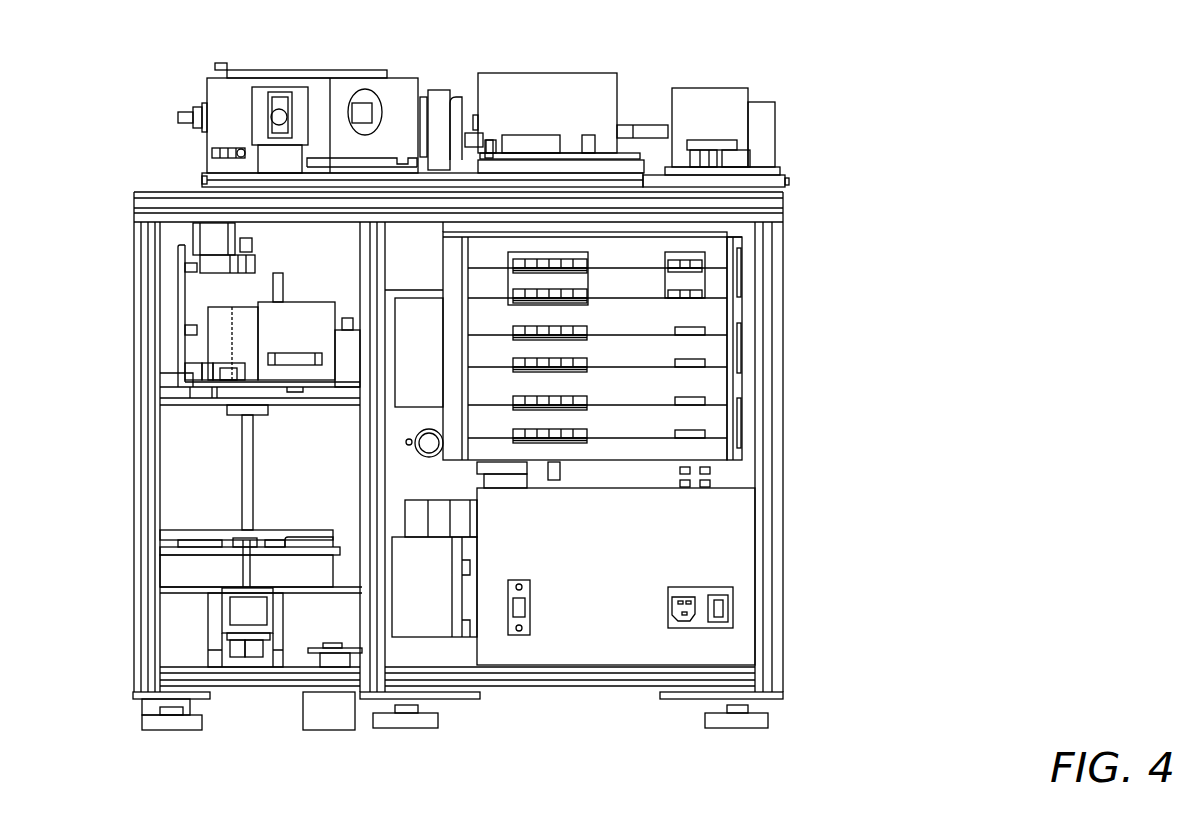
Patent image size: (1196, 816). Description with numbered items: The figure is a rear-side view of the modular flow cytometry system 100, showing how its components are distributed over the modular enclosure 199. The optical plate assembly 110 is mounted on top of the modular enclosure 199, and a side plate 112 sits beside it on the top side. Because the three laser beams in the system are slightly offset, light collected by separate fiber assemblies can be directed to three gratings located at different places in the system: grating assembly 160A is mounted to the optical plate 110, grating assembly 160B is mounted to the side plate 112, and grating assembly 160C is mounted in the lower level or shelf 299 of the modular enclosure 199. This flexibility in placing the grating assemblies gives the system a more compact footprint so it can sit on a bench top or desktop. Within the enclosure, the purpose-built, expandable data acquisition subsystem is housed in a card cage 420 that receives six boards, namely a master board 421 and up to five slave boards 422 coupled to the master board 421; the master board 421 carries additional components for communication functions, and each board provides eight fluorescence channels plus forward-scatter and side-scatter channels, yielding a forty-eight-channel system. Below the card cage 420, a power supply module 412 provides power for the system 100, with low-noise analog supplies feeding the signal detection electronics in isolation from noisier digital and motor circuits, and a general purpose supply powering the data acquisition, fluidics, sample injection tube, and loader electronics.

The modular flow cytometry system 100 is at (1088, 193).
The optical plate assembly 110 is at (203, 182).
The side plate 112 is at (788, 182).
The grating assembly 160A is at (530, 100).
The grating assembly 160B is at (708, 115).
The grating assembly 160C is at (312, 315).
The lower level/shelf 299 is at (170, 325).
The card cage 420 is at (748, 457).
The master board 421 is at (712, 243).
The slave boards 422 is at (710, 420).
The power supply module 412 is at (712, 538).
The modular enclosure 199 is at (777, 637).